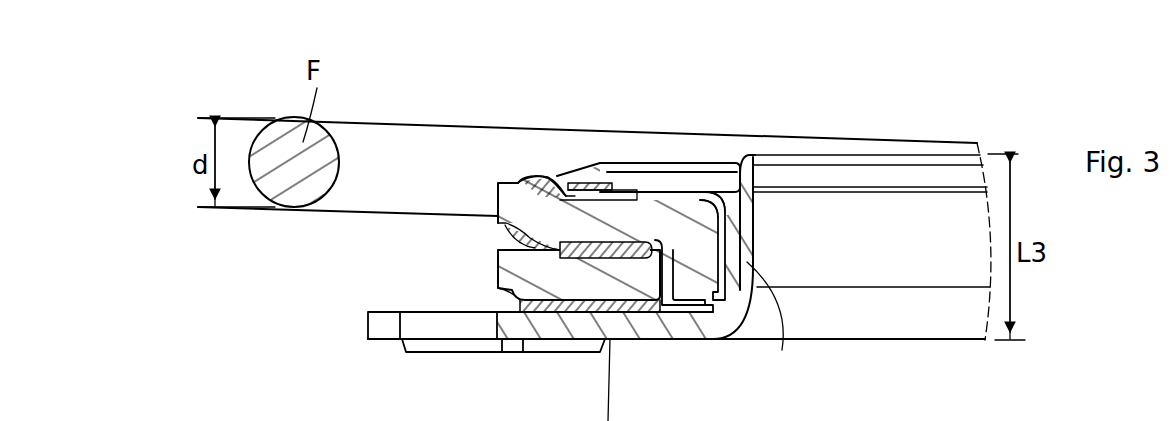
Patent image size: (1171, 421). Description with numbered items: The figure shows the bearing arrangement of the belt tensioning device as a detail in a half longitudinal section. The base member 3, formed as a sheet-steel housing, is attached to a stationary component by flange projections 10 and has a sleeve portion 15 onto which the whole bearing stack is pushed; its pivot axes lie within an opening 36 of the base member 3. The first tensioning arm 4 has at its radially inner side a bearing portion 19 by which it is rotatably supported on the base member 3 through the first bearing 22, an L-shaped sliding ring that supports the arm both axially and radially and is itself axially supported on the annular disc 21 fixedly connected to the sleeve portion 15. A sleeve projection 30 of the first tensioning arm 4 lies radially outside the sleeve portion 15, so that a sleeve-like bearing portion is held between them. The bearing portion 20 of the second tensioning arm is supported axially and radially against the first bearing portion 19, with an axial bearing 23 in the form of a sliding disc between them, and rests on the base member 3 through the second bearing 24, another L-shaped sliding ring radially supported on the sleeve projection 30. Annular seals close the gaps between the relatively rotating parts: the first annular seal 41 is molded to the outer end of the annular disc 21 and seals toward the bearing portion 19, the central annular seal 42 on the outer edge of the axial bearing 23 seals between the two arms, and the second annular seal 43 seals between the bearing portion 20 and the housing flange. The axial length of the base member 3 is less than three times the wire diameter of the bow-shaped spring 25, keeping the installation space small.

The base member 3 is at (859, 342).
The first tensioning arm 4 is at (585, 200).
The flange projections 10 is at (435, 334).
The sleeve portion 15 is at (752, 262).
The bearing portion 19 is at (722, 195).
The bearing portion 20 is at (580, 285).
The annular disc 21 is at (690, 192).
The first bearing 22 is at (672, 168).
The axial bearing 23 is at (598, 215).
The second bearing 24 is at (607, 300).
The bow-shaped spring 25 is at (442, 140).
The sleeve projection 30 is at (700, 318).
The opening 36 is at (910, 212).
The first annular seal 41 is at (528, 180).
The central annular seal 42 is at (505, 240).
The second annular seal 43 is at (522, 305).